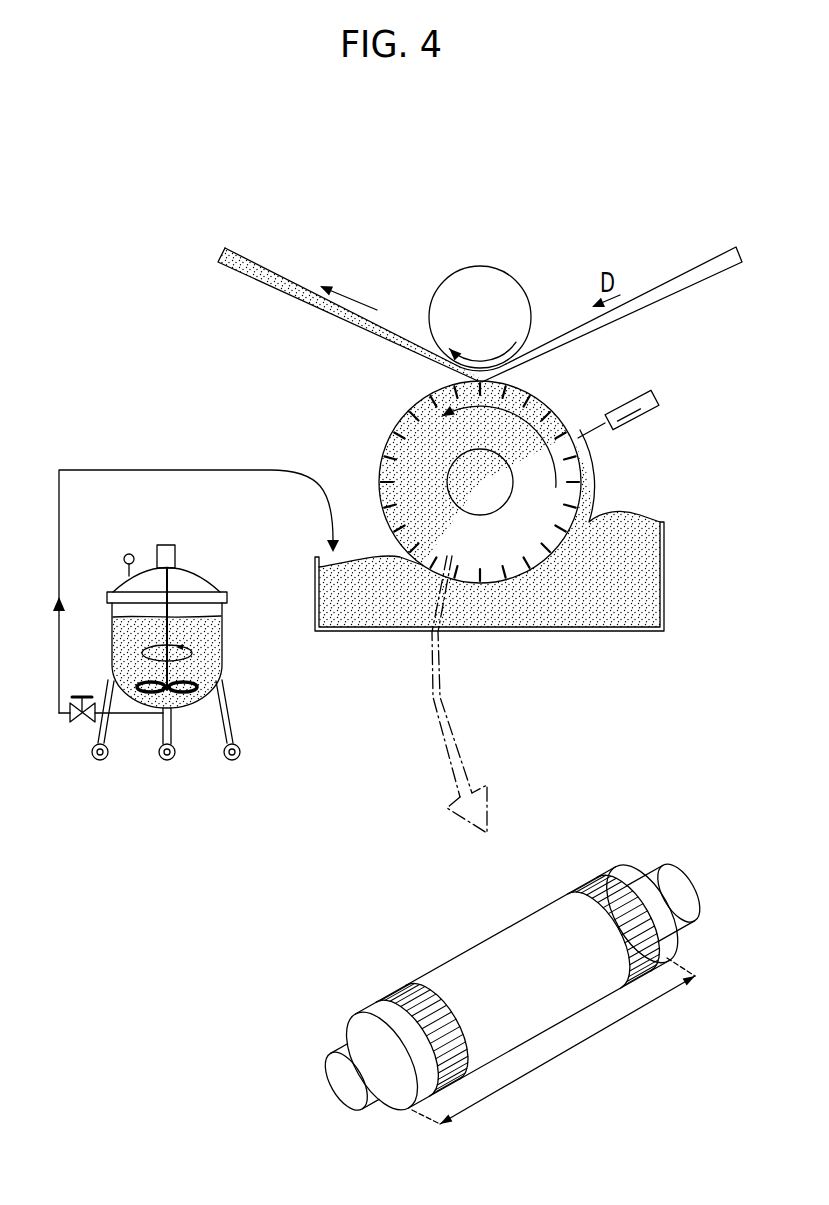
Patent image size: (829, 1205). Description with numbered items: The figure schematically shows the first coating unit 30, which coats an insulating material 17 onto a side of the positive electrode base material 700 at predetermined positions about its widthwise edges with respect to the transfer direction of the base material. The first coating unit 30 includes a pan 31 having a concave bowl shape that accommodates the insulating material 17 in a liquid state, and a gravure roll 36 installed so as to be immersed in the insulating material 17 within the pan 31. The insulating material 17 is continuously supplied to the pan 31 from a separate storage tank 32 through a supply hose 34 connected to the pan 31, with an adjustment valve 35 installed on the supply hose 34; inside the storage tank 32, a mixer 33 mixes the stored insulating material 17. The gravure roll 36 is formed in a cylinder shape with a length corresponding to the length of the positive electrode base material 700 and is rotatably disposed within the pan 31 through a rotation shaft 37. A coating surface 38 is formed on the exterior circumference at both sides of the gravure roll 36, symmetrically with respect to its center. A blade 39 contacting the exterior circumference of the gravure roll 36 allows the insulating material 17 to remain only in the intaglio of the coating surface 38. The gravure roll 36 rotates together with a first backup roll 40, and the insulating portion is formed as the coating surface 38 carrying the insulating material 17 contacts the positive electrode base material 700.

The insulating material 17 is at (255, 277).
The first coating unit 30 is at (405, 388).
The pan 31 is at (663, 572).
The storage tank 32 is at (192, 570).
The mixer 33 is at (177, 608).
The supply hose 34 is at (60, 550).
The adjustment valve 35 is at (71, 721).
The gravure roll 36 is at (478, 957).
The rotation shaft 37 is at (457, 482).
The coating surface 38 is at (380, 483).
The blade 39 is at (662, 402).
The first backup roll 40 is at (484, 283).
The positive electrode base material 700 is at (702, 272).